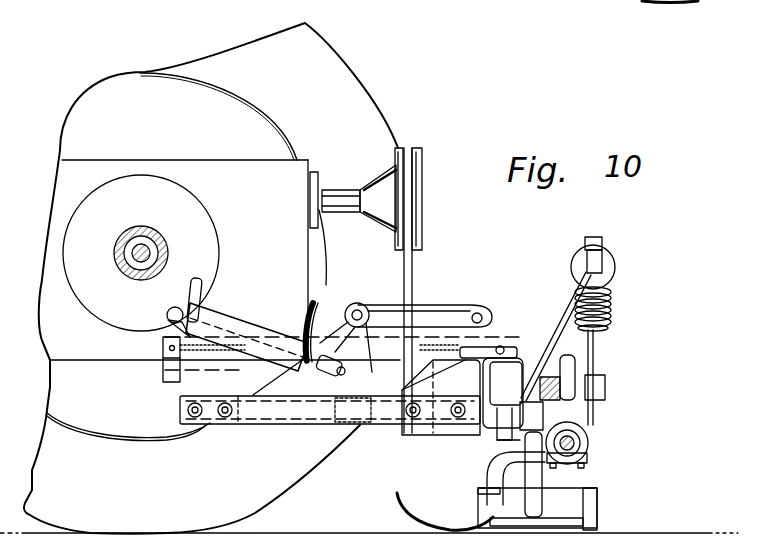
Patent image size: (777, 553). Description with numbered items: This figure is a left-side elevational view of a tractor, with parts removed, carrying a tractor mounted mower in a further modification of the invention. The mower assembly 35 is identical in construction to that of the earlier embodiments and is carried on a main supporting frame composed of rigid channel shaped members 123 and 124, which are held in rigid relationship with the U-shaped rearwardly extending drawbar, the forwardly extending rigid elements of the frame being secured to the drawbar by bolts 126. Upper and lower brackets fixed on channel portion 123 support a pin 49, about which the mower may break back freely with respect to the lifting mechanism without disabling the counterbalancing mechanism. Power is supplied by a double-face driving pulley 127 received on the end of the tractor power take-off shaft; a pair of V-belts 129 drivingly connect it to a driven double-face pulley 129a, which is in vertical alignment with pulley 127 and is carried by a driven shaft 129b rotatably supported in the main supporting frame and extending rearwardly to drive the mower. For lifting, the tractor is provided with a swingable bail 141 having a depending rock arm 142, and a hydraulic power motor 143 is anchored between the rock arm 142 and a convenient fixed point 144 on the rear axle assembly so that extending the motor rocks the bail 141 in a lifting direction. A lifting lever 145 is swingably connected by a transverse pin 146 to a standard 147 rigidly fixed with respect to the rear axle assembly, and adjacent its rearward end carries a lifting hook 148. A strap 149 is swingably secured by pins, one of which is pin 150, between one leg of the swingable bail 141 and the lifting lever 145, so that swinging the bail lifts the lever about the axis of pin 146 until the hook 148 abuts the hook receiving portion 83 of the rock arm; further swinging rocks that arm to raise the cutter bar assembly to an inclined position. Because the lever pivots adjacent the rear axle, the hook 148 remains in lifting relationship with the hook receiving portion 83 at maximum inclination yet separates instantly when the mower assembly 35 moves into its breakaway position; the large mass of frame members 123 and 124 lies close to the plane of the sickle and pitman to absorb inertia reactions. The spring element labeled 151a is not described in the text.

The mower assembly 35 is at (602, 478).
The pin 49 is at (490, 447).
The hook receiving portion 83 is at (575, 350).
The channel iron 123 is at (463, 440).
The channel iron 124 is at (437, 438).
The bolts 126 is at (483, 440).
The double-face driving pulley 127 is at (423, 185).
The V-belts 129 is at (406, 268).
The driven double-face pulley 129a is at (336, 378).
The driven shaft 129b is at (417, 438).
The swingable bail 141 is at (440, 325).
The rock arm 142 is at (352, 322).
The hydraulic power motor 143 is at (262, 330).
The fixed point on rear axle assembly 144 is at (168, 312).
The lifting lever 145 is at (178, 383).
The transverse pin 146 is at (169, 348).
The standard 147 is at (163, 358).
The lifting hook 148 is at (590, 427).
The strap 149 is at (496, 345).
The pin 150 is at (480, 310).
The spring 151a is at (512, 342).